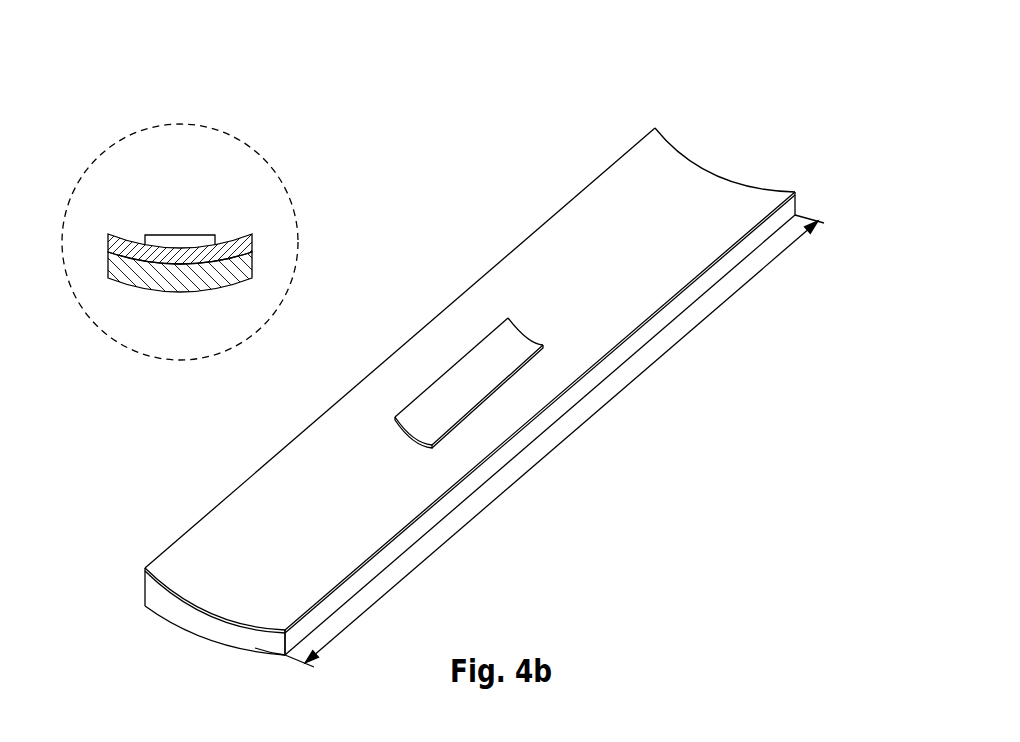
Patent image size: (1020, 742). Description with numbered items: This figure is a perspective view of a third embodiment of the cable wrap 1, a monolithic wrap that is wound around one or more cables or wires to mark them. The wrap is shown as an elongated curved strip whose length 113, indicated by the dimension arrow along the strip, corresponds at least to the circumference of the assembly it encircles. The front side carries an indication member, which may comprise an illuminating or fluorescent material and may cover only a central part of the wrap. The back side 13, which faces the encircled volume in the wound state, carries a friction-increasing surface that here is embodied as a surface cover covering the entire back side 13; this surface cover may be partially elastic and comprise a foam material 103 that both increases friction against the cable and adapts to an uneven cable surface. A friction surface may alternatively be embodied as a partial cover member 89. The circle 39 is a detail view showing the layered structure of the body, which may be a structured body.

The cable wrap 1 is at (658, 110).
The back side 13 is at (272, 672).
The circle 39 is at (216, 110).
The partial cover member 89 is at (250, 270).
The foam material 103 is at (163, 611).
The length 113 is at (548, 452).